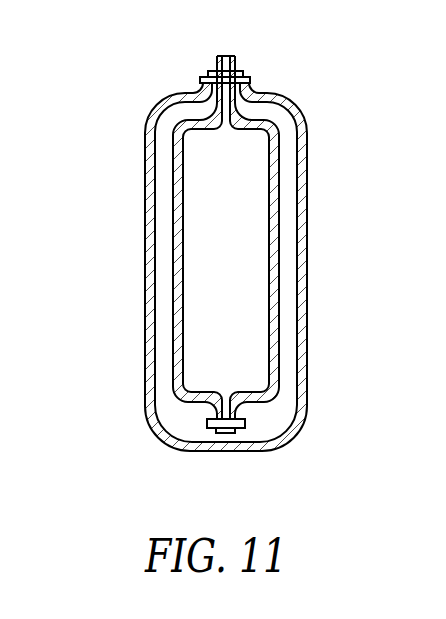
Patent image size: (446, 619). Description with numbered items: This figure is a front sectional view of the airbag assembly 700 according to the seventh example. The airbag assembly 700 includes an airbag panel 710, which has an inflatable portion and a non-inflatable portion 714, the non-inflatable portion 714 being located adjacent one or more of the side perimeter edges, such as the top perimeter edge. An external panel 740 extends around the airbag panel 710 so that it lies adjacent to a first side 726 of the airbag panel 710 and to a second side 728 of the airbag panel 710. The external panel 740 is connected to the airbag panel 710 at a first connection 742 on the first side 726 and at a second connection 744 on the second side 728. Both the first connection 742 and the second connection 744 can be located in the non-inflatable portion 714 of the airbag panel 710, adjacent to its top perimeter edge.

The airbag assembly 700 is at (112, 52).
The airbag panel 710 is at (272, 181).
The non-inflatable portion 714 is at (220, 57).
The first side 726 is at (277, 253).
The second side 728 is at (174, 259).
The external panel 740 is at (299, 129).
The first connection 742 is at (250, 80).
The second connection 744 is at (212, 72).